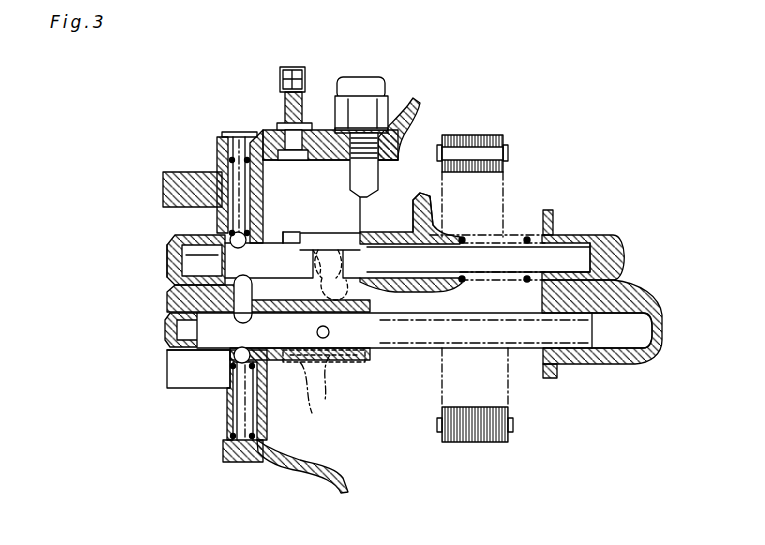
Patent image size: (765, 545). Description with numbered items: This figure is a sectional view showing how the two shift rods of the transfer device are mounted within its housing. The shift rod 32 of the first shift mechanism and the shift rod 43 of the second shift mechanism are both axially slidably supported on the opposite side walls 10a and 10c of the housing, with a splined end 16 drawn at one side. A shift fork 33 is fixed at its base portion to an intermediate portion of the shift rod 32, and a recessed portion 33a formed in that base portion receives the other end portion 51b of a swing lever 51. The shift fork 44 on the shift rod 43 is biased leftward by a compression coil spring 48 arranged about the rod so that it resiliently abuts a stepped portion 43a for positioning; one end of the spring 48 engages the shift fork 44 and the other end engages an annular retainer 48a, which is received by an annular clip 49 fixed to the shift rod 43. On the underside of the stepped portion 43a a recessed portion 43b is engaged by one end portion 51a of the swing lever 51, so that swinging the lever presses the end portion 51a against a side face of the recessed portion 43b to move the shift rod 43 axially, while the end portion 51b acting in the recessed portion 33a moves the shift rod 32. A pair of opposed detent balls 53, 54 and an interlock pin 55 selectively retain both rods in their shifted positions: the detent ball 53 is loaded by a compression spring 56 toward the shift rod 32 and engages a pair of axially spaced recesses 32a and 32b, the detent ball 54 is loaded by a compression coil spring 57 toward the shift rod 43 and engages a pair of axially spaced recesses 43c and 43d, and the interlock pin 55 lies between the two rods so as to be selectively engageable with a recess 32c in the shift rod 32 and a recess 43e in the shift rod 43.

The side wall 10a is at (305, 480).
The side wall 10c is at (560, 368).
The splined shaft end 16 is at (503, 142).
The shift rod 32 is at (527, 345).
The recess 32a is at (262, 357).
The recess 32b is at (167, 375).
The recess 32c is at (316, 331).
The shift fork 33 is at (372, 362).
The recessed portion 33a is at (308, 399).
The shift rod 43 is at (580, 240).
The stepped portion 43a is at (350, 236).
The recessed portion 43b is at (318, 250).
The recess 43c is at (202, 263).
The recess 43d is at (283, 242).
The recess 43e is at (183, 284).
The shift fork 44 is at (437, 225).
The compression coil spring 48 is at (462, 238).
The annular retainer 48a is at (527, 238).
The annular clip 49 is at (549, 234).
The swing lever 51 is at (354, 298).
The end portion 51a is at (334, 245).
The end portion 51b is at (331, 383).
The detent ball 53 is at (238, 364).
The detent ball 54 is at (229, 238).
The interlock pin 55 is at (237, 297).
The compression spring 56 is at (226, 428).
The compression coil spring 57 is at (217, 160).